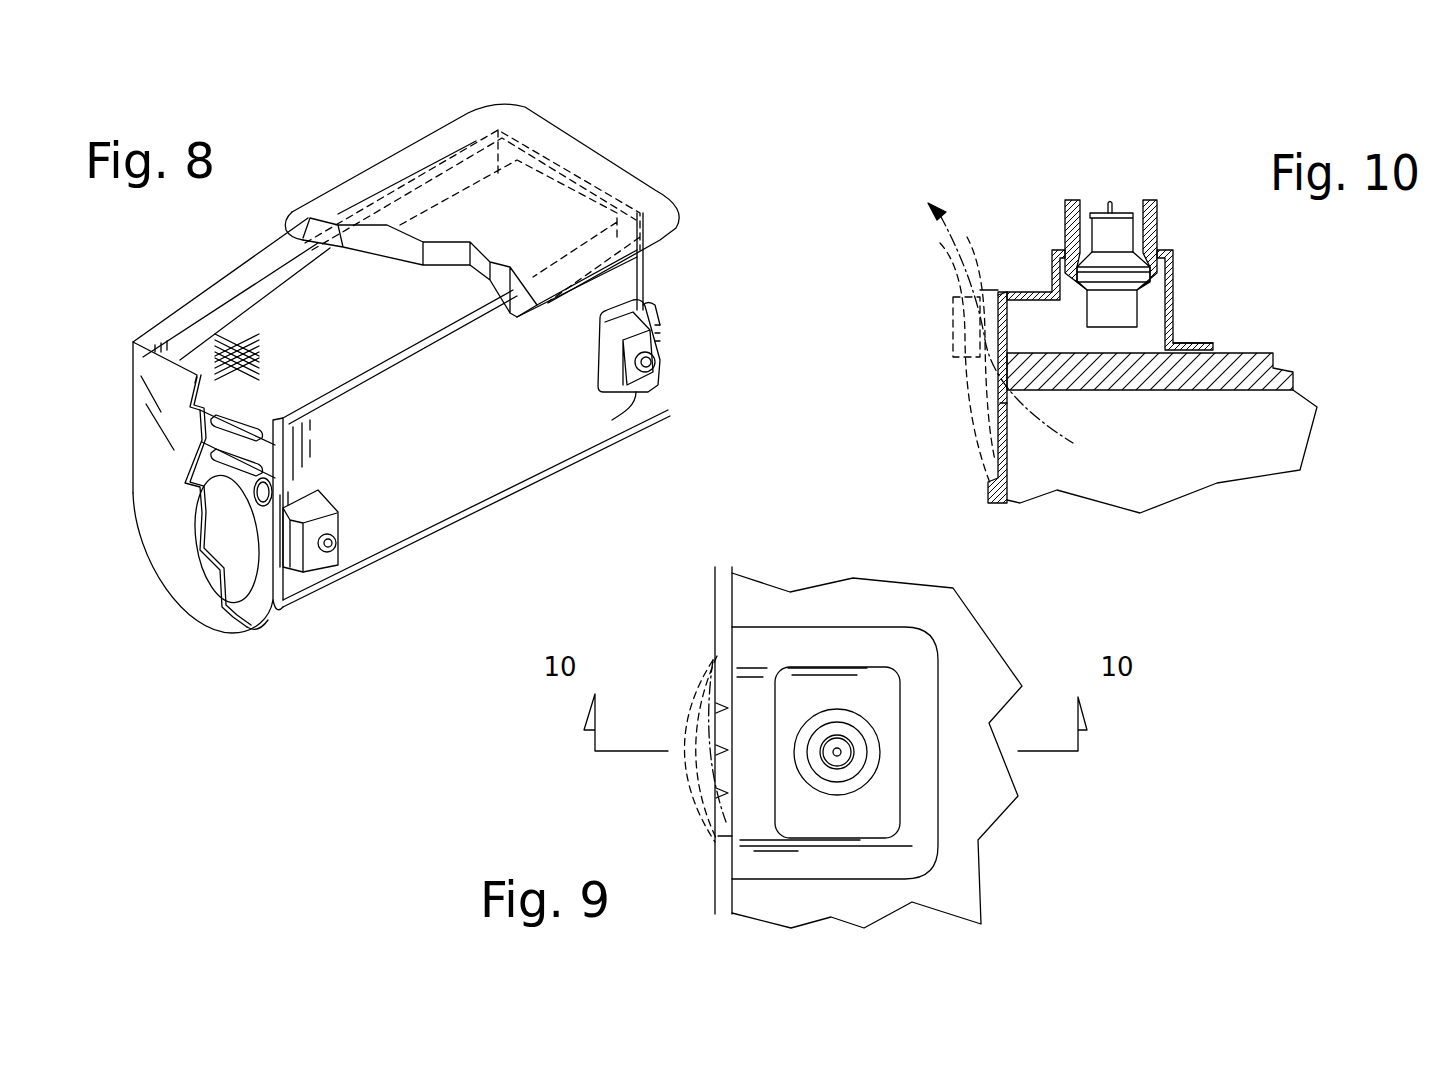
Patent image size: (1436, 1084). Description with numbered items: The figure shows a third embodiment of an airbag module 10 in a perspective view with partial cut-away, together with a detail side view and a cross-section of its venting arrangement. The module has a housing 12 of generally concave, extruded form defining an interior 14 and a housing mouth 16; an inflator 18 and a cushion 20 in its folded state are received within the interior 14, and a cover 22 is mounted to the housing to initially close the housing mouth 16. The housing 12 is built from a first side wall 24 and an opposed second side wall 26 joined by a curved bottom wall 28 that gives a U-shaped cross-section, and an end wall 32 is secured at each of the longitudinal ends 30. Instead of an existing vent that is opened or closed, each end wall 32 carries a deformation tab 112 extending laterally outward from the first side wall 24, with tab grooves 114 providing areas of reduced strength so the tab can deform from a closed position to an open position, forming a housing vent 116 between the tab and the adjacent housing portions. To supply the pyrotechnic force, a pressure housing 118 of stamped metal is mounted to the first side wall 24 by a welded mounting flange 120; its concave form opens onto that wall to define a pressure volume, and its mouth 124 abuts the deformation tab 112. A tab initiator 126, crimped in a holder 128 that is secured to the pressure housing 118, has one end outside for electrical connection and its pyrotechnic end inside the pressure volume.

In FIG. 8, the airbag module 10 is at (340, 157).
In FIG. 8, the housing 12 is at (135, 342).
In FIG. 8, the interior 14 is at (238, 608).
In FIG. 10, the interior 14 is at (1162, 451).
In FIG. 8, the housing mouth 16 is at (420, 338).
In FIG. 8, the inflator 18 is at (222, 550).
In FIG. 8, the cushion 20 is at (277, 318).
In FIG. 8, the cover 22 is at (598, 160).
In FIG. 8, the first side wall 24 is at (482, 343).
In FIG. 10, the first side wall 24 is at (1227, 390).
In FIG. 9, the first side wall 24 is at (955, 865).
In FIG. 8, the second side wall 26 is at (283, 278).
In FIG. 8, the bottom wall 28 is at (260, 610).
In FIG. 8, the longitudinal ends 30 is at (643, 252).
In FIG. 8, the end wall 32 is at (648, 290).
In FIG. 10, the end wall 32 is at (1007, 453).
In FIG. 9, the end wall 32 is at (715, 592).
In FIG. 8, the deformation tab 112 is at (660, 325).
In FIG. 10, the deformation tab 112 is at (1000, 322).
In FIG. 9, the deformation tab 112 is at (717, 778).
In FIG. 10, the tab grooves 114 is at (1000, 403).
In FIG. 9, the tab grooves 114 is at (722, 720).
In FIG. 10, the housing vent 116 is at (942, 244).
In FIG. 9, the housing vent 116 is at (698, 838).
In FIG. 8, the pressure housing 118 is at (600, 360).
In FIG. 10, the pressure housing 118 is at (1177, 313).
In FIG. 9, the pressure housing 118 is at (820, 690).
In FIG. 10, the mounting flange 120 is at (1207, 343).
In FIG. 9, the mounting flange 120 is at (915, 828).
In FIG. 8, the mouth 124 is at (287, 528).
In FIG. 10, the mouth 124 is at (998, 295).
In FIG. 9, the mouth 124 is at (732, 690).
In FIG. 10, the tab initiator 126 is at (1133, 277).
In FIG. 9, the tab initiator 126 is at (860, 752).
In FIG. 8, the holder 128 is at (655, 365).
In FIG. 10, the holder 128 is at (1157, 212).
In FIG. 9, the holder 128 is at (870, 715).